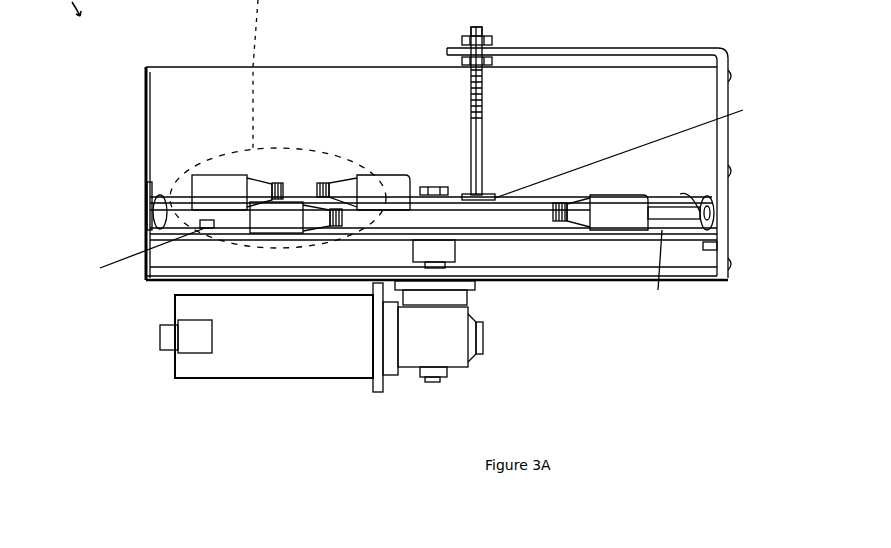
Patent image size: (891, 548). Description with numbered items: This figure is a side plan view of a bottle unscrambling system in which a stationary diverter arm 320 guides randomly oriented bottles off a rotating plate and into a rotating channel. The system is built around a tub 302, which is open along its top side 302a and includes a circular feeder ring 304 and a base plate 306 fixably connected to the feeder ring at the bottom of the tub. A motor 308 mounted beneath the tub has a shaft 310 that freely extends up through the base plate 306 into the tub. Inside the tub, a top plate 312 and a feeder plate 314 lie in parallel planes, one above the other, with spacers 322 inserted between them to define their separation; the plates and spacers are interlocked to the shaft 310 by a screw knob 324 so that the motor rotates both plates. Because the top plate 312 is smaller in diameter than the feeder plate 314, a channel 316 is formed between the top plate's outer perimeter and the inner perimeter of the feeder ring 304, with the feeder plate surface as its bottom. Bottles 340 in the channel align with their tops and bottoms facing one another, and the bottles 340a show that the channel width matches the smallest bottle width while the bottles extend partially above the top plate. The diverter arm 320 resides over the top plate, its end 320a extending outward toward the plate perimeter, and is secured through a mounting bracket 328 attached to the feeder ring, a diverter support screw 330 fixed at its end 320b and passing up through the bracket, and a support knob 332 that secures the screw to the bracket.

The tub 302 is at (136, 158).
The top side 302a is at (217, 57).
The circular feeder ring 304 is at (146, 97).
The base plate 306 is at (525, 282).
The motor 308 is at (340, 378).
The shaft 310 is at (432, 385).
The top plate 312 is at (712, 205).
The feeder plate 314 is at (705, 248).
The channel 316 is at (444, 211).
The diverter arm 320 is at (593, 184).
The end of diverter arm 320a is at (189, 179).
The end of diverter arm 320b is at (502, 192).
The spacers 322 is at (369, 264).
The screw knob 324 is at (426, 187).
The mounting bracket 328 is at (622, 47).
The diverter support screw 330 is at (483, 98).
The support knob 332 is at (487, 37).
The bottles 340 is at (605, 202).
The bottles 340a is at (153, 208).